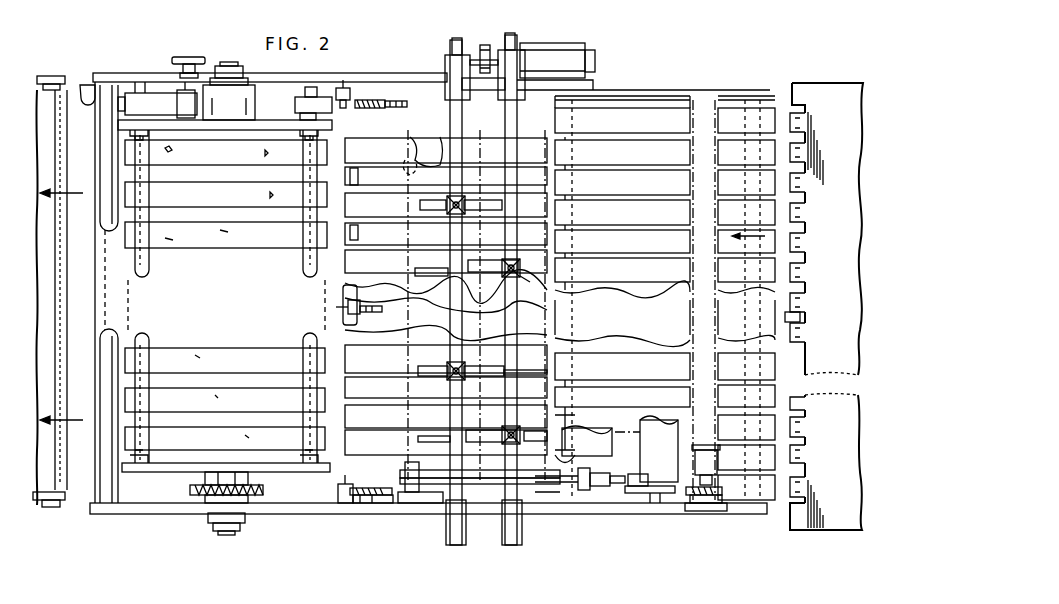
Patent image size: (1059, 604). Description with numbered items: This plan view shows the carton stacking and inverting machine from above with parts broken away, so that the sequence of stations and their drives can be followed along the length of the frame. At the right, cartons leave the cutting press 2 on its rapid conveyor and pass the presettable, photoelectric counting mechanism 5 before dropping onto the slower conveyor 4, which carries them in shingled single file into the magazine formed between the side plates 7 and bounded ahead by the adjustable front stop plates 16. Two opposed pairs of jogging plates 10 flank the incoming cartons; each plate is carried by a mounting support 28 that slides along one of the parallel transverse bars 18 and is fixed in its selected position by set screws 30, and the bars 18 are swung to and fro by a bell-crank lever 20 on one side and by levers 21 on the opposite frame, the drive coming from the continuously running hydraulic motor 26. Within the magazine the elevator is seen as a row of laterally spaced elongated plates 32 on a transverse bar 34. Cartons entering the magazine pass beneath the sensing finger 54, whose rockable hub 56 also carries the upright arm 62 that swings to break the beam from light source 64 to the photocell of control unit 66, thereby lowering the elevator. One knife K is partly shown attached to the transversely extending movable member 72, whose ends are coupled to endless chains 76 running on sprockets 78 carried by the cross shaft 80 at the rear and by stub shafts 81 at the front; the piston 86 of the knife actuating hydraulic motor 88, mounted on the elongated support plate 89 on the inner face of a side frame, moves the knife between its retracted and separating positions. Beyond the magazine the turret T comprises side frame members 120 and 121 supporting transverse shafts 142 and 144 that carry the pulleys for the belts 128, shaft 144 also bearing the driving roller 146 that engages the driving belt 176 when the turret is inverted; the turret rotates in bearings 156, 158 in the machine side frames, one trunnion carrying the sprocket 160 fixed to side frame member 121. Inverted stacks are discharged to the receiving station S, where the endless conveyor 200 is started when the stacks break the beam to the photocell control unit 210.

The cutting press 2 is at (832, 243).
The conveyor 4 is at (638, 365).
The counting mechanism 5 is at (795, 322).
The side plates 7 is at (130, 73).
The jogging plates 10 is at (428, 265).
The front stop plates 16 is at (360, 176).
The transverse bars 18 is at (452, 118).
The bell-crank lever 20 is at (446, 60).
The levers 21 is at (455, 538).
The hydraulic motor 26 is at (565, 50).
The mounting supports 28 is at (505, 262).
The set screws 30 is at (520, 280).
The elongated plates 32 is at (390, 160).
The transverse bar 34 is at (424, 140).
The sensing finger 54 is at (370, 312).
The rockable hub 56 is at (336, 306).
The upright arm 62 is at (357, 290).
The light source 64 is at (343, 88).
The control unit 66 is at (343, 503).
The movable member 72 is at (668, 471).
The chains 76 is at (398, 98).
The sprockets 78 is at (375, 98).
The cross shaft 80 is at (700, 452).
The stub shafts 81 is at (366, 503).
The piston 86 is at (608, 485).
The knife actuating hydraulic motor 88 is at (563, 476).
The support plate 89 is at (430, 486).
The side frame member 120 is at (280, 122).
The side frame member 121 is at (285, 472).
The belts 128 is at (236, 245).
The transverse shaft 142 is at (148, 258).
The transverse shaft 144 is at (303, 258).
The driving roller 146 is at (304, 95).
The bearings 156 is at (213, 518).
The bearings 158 is at (226, 65).
The sprocket 160 is at (190, 490).
The driving belt 176 is at (170, 100).
The endless conveyor 200 is at (60, 487).
The photocell control unit 210 is at (86, 88).
The receiving station S is at (61, 523).
The turret T is at (290, 492).
The knife K is at (596, 452).